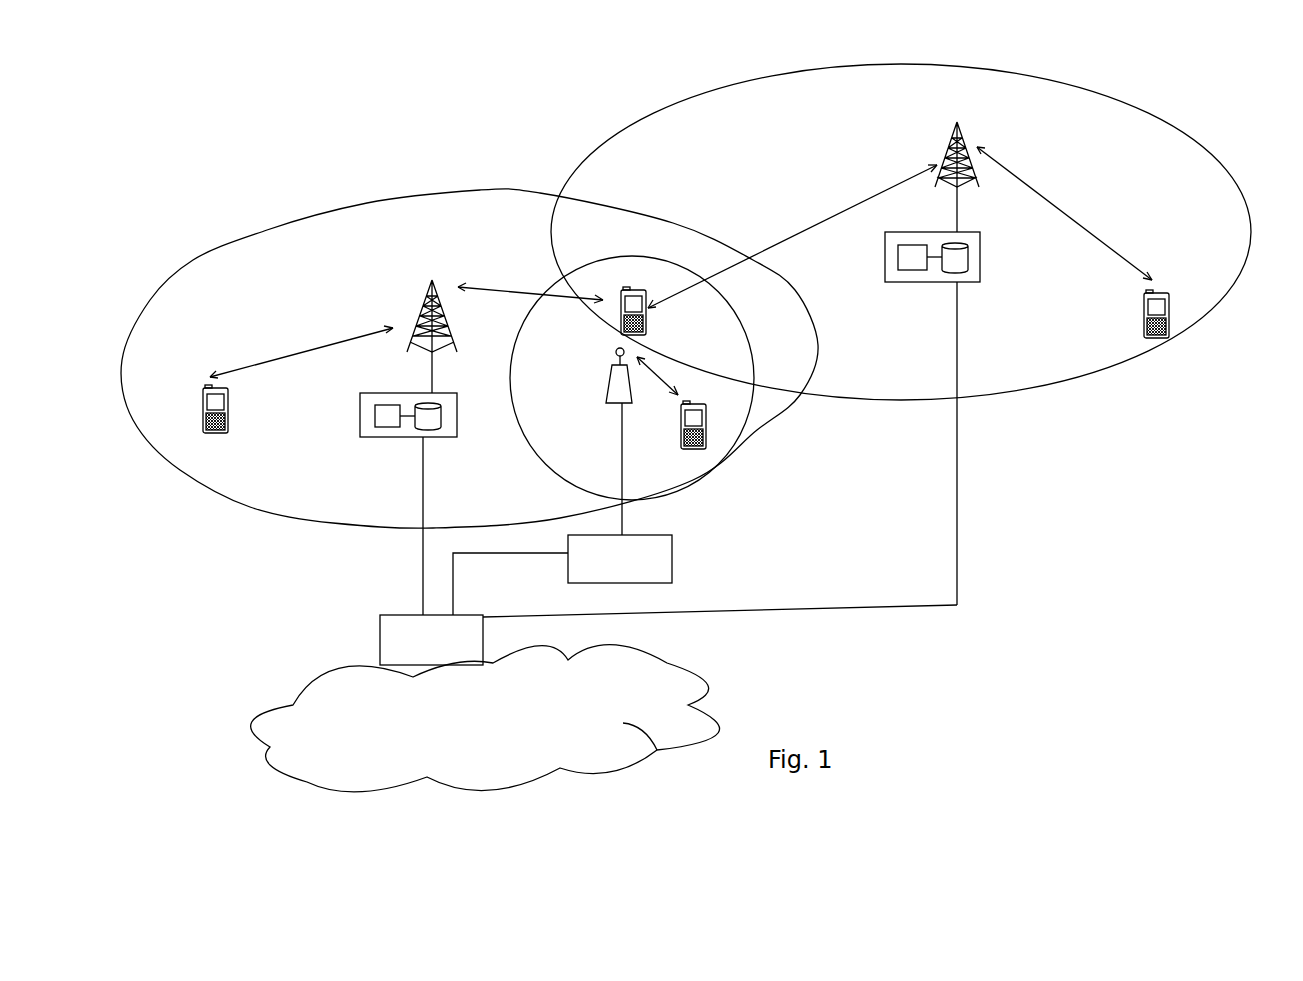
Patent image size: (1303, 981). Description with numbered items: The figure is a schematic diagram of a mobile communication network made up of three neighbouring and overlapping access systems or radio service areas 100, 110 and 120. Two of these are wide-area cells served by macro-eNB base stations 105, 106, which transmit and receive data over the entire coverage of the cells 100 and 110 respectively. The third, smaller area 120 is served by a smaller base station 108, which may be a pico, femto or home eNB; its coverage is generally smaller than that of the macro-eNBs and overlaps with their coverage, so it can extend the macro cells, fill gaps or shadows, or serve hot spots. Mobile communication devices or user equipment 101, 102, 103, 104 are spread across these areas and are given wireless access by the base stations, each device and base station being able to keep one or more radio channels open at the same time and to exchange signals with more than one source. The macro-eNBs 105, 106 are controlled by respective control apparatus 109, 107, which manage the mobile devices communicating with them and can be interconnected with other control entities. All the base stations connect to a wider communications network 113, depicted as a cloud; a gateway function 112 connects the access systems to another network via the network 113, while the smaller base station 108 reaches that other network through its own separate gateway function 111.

The radio service area 100 is at (195, 218).
The radio service area 110 is at (612, 130).
The radio service area 120 is at (755, 330).
The user equipment 101 is at (202, 435).
The user equipment 102 is at (1150, 338).
The user equipment 103 is at (706, 450).
The user equipment 104 is at (620, 292).
The macro-eNB 105 is at (415, 322).
The macro-eNB 106 is at (935, 160).
The control apparatus 107 is at (885, 237).
The smaller base station 108 is at (604, 399).
The control apparatus 109 is at (360, 395).
The gateway function 111 is at (673, 553).
The gateway function 112 is at (380, 633).
The wider communications network 113 is at (323, 692).